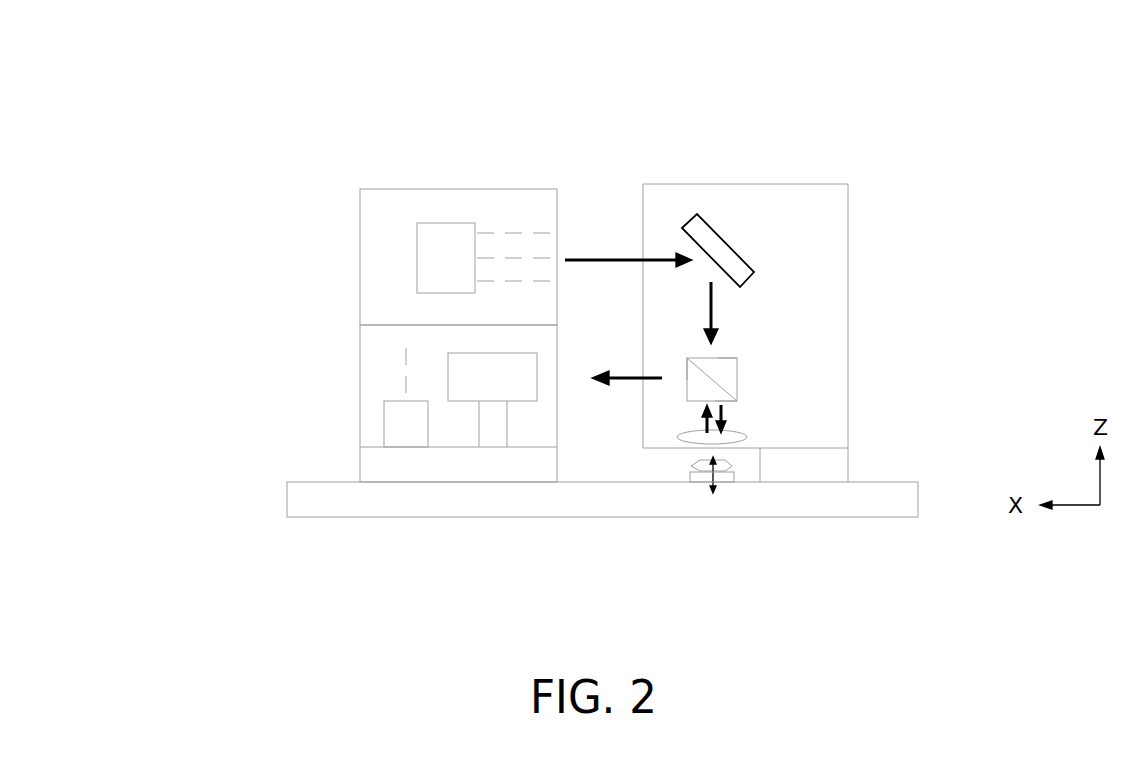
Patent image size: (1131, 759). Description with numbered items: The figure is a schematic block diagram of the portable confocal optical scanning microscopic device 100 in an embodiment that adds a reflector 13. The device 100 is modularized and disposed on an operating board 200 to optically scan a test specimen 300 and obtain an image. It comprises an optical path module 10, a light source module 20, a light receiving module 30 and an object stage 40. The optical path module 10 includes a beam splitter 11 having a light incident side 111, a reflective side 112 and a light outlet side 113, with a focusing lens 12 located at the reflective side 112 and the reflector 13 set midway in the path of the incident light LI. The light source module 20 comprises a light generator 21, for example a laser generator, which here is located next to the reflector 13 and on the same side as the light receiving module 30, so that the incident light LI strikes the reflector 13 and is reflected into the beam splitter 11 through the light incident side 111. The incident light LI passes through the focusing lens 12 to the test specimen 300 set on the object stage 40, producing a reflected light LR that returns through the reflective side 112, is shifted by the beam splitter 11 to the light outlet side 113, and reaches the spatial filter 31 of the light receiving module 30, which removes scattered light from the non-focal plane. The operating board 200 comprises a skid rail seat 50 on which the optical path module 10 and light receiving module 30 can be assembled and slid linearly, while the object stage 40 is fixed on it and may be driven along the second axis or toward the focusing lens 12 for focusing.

The portable confocal optical scanning microscopic device 100 is at (420, 45).
The operating board 200 is at (272, 459).
The test specimen 300 is at (725, 464).
The optical path module 10 is at (876, 305).
The beam splitter 11 is at (737, 380).
The light incident side 111 is at (720, 358).
The reflective side 112 is at (733, 401).
The light outlet side 113 is at (686, 364).
The focusing lens 12 is at (747, 436).
The reflector 13 is at (728, 240).
The light source module 20 is at (345, 235).
The light generator 21 is at (447, 223).
The light receiving module 30 is at (340, 366).
The spatial filter 31 is at (402, 422).
The object stage 40 is at (687, 478).
The skid rail seat 50 is at (297, 500).
The incident light LI is at (613, 258).
The reflected light LR is at (708, 425).